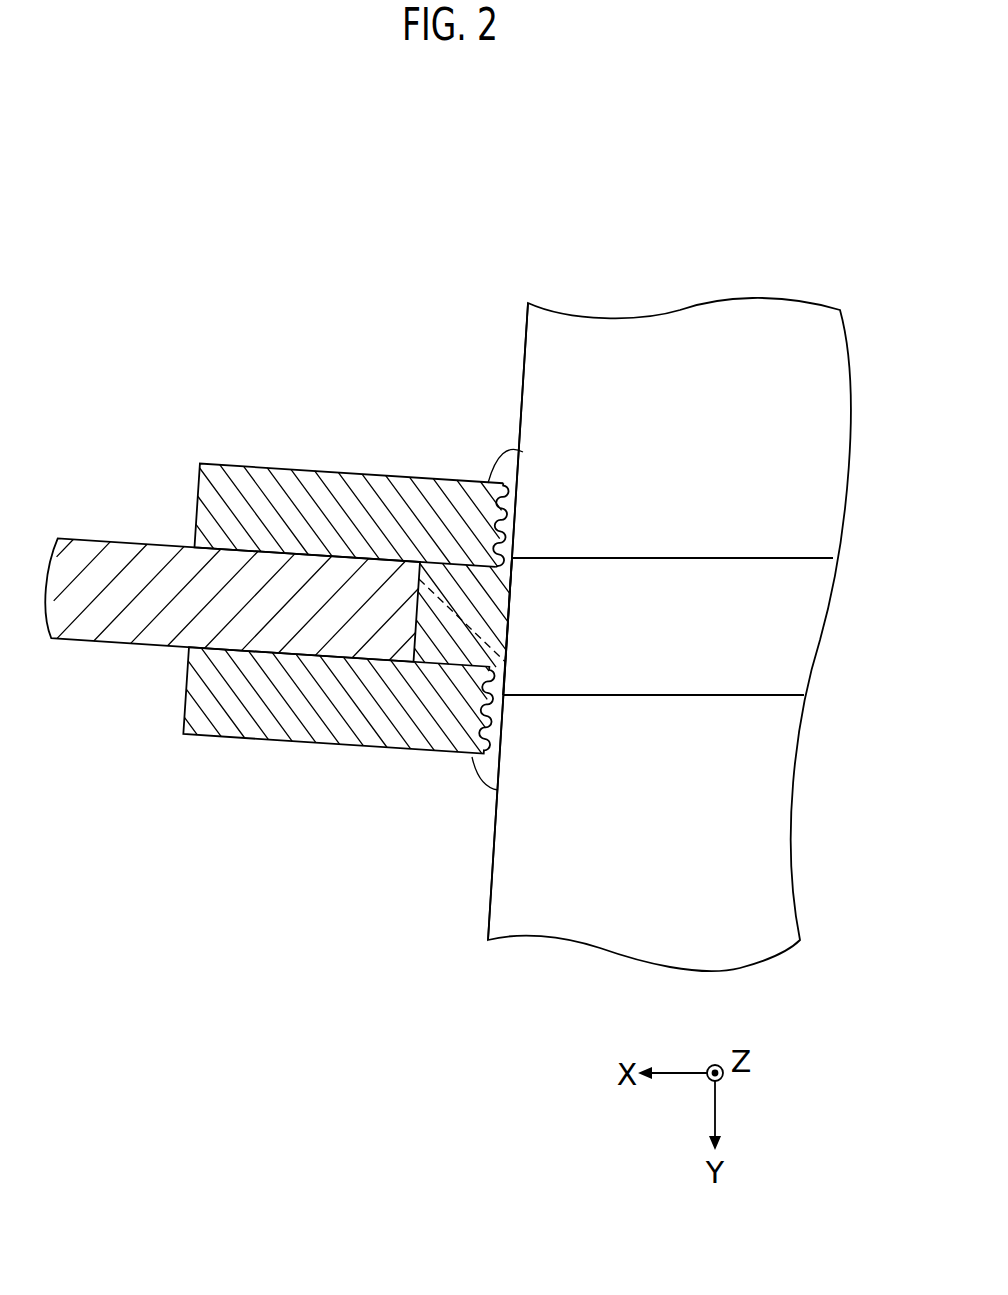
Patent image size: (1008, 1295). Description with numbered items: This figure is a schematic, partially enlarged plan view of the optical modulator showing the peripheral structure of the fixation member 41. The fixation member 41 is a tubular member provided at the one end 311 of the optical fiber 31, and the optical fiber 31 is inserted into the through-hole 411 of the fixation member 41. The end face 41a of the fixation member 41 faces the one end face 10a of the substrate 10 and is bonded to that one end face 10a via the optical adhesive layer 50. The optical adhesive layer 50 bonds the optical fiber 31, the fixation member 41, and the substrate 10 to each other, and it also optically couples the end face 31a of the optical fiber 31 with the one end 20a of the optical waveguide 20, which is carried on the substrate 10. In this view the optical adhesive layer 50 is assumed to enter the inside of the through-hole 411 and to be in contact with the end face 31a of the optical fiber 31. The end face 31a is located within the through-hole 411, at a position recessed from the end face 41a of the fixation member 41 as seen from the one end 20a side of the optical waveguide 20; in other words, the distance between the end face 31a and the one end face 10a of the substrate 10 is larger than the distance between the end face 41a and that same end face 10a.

The substrate 10 is at (647, 953).
The one end face of the substrate 10a is at (492, 872).
The optical waveguide 20 is at (812, 627).
The one end of the optical waveguide 20a is at (503, 641).
The optical fiber 31 is at (110, 638).
The end face of the optical fiber 31a is at (428, 600).
The one end of the optical fiber 311 is at (165, 505).
The fixation member 41 is at (238, 733).
The end face of the fixation member 41a is at (500, 523).
The through-hole 411 is at (293, 653).
The optical adhesive layer 50 is at (465, 613).